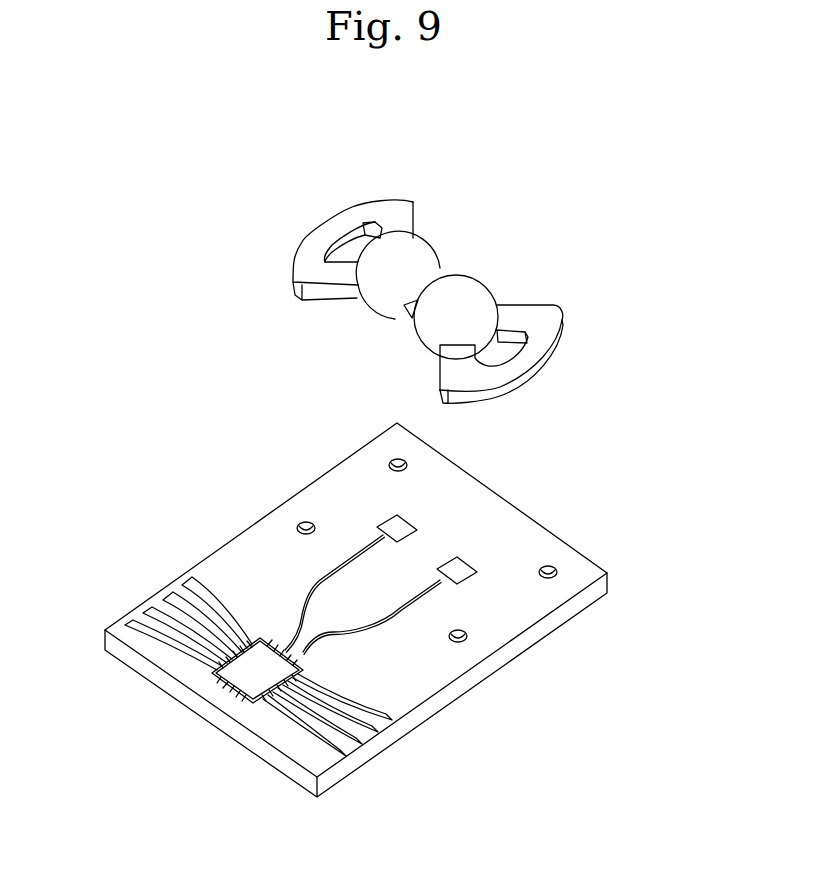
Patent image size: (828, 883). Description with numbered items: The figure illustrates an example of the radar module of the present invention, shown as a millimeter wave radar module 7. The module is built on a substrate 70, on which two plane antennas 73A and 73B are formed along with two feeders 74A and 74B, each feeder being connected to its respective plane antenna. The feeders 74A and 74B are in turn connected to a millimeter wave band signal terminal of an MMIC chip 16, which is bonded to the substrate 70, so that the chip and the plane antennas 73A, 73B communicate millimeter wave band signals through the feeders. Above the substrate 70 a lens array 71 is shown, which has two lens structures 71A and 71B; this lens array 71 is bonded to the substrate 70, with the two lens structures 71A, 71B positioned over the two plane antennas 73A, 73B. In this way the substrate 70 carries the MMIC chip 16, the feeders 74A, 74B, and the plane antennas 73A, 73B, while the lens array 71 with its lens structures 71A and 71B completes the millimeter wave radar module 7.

The millimeter wave radar module 7 is at (79, 149).
The MMIC chip 16 is at (247, 672).
The substrate 70 is at (405, 690).
The lens array 71 is at (407, 313).
The lens structure 71A is at (306, 513).
The lens structure 71B is at (548, 561).
The plane antenna 73A is at (393, 528).
The plane antenna 73B is at (463, 582).
The feeder 74A is at (327, 570).
The feeder 74B is at (397, 615).